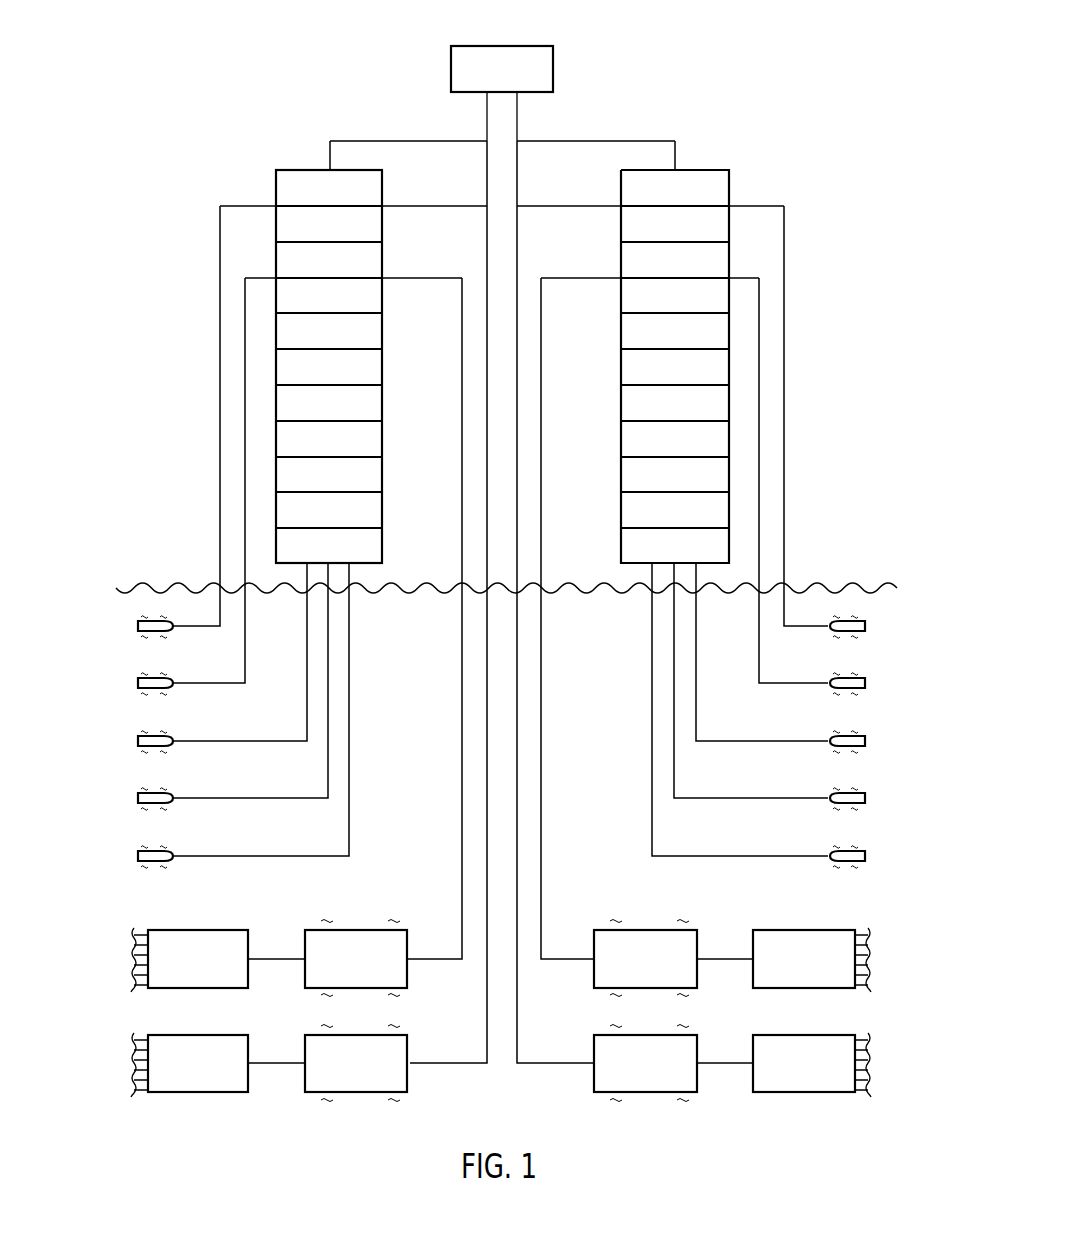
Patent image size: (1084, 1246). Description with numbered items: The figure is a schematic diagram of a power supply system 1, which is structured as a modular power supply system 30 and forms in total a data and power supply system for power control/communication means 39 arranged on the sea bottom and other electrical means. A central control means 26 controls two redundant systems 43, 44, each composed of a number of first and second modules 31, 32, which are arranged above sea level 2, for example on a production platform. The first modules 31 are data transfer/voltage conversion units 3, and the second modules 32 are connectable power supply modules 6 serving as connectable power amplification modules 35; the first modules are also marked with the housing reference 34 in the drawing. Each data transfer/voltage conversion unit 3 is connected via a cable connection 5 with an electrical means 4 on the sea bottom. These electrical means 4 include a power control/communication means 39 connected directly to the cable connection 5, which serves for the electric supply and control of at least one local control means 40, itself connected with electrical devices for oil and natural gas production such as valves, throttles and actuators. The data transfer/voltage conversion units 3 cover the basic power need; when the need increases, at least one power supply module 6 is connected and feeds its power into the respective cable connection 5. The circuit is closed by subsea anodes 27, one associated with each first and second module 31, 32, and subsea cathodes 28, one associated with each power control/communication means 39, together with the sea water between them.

The power supply system 1 is at (490, 555).
The modular power supply system 30 is at (790, 96).
The central control means 26 is at (490, 85).
The redundant system 43 is at (321, 132).
The redundant system 44 is at (683, 132).
The data transfer/voltage conversion unit 3 is at (263, 186).
The first module 31 is at (745, 307).
The module housing 34 is at (745, 188).
The second module 32 is at (736, 503).
The connectable power amplification module 35 is at (717, 545).
The cable connection 5 is at (541, 322).
The power supply module 6 is at (370, 548).
The sea level 2 is at (826, 582).
The subsea anode 27 is at (143, 850).
The electrical means 4 is at (372, 892).
The subsea cathode 28 is at (344, 971).
The power control/communication means 39 is at (344, 1075).
The local control means 40 is at (186, 971).